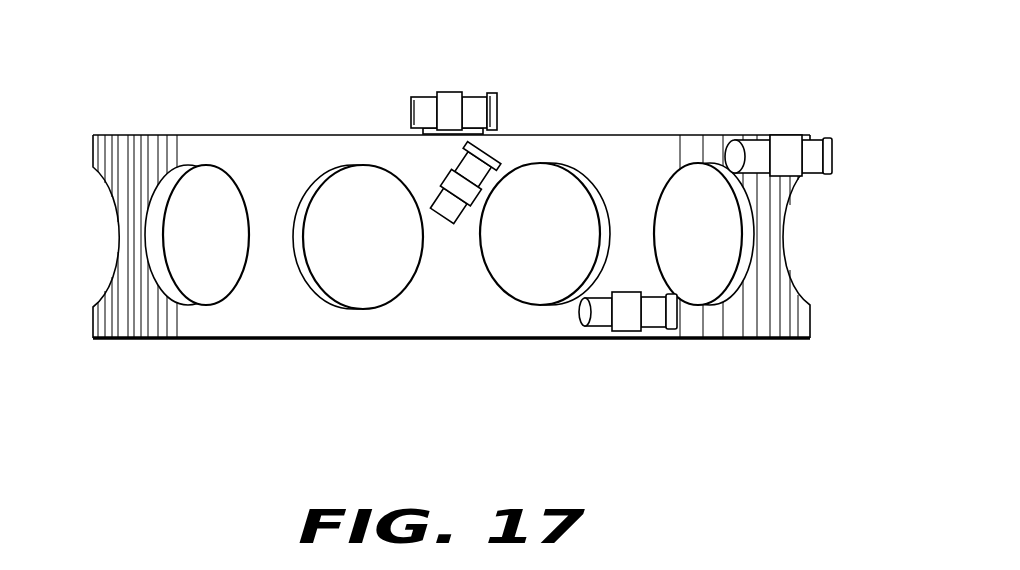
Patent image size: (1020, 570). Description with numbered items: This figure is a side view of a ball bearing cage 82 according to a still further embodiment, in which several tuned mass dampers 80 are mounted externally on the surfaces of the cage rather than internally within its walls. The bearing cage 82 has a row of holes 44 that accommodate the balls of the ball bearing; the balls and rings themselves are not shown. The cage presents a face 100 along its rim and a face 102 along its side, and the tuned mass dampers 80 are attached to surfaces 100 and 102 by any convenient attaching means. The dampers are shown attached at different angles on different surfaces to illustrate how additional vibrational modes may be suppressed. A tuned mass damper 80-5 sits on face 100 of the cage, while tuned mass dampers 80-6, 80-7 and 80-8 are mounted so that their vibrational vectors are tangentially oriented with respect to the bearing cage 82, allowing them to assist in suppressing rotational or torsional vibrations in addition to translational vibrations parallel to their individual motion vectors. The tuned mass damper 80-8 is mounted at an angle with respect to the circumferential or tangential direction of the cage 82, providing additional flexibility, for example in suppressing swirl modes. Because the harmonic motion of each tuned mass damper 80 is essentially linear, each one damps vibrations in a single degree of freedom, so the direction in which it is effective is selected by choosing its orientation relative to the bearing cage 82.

The tuned mass damper 80 is at (678, 82).
The tuned mass damper 80-5 is at (478, 93).
The tuned mass damper 80-6 is at (826, 155).
The tuned mass damper 80-7 is at (632, 335).
The tuned mass damper 80-8 is at (485, 150).
The holes 44 is at (101, 237).
The bearing cage 82 is at (266, 322).
The face 100 is at (164, 135).
The face 102 is at (267, 152).